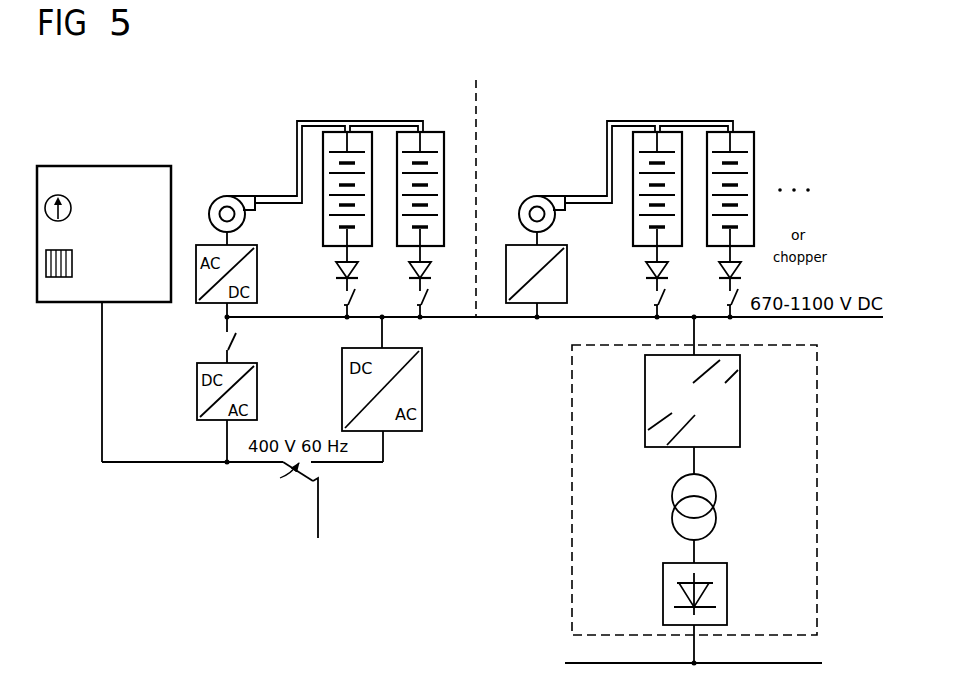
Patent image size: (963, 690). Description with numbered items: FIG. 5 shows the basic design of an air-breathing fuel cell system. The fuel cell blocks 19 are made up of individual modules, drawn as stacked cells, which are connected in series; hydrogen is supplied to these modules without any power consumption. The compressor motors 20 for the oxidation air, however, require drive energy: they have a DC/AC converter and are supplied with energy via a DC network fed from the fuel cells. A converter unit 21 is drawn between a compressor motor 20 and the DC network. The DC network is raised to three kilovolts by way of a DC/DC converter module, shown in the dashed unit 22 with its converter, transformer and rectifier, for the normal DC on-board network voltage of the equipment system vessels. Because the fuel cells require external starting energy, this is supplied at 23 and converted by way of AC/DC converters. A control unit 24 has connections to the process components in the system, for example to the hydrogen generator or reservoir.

The fuel cell blocks 19 is at (592, 126).
The compressor motors 20 is at (222, 198).
The AC/DC converter 21 is at (567, 272).
The DC transmission unit (converter, transformer, rectifier) 22 is at (582, 468).
The external starting energy supply 23 is at (321, 502).
The process technique control unit 24 is at (100, 172).